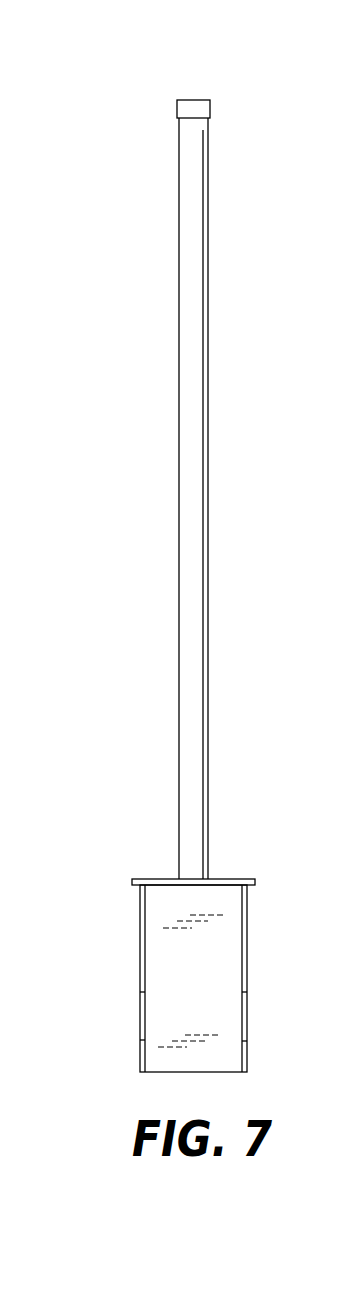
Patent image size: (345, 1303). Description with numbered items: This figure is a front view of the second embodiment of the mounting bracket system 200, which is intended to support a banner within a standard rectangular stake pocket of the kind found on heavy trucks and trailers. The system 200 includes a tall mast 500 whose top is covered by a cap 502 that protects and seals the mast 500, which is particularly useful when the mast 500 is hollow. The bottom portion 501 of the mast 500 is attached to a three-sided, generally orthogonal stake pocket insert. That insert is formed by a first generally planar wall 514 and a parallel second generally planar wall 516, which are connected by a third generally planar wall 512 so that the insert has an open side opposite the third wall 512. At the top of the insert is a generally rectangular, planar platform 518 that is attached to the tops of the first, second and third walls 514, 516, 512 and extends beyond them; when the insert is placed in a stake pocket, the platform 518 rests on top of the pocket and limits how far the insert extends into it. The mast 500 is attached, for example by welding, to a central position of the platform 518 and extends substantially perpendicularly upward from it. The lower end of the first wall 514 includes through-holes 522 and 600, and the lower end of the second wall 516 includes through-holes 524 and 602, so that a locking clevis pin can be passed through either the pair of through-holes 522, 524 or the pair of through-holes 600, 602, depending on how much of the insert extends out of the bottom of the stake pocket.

The system 200 is at (122, 435).
The mast 500 is at (208, 542).
The bottom portion 501 is at (72, 917).
The cap 502 is at (192, 100).
The third generally planar wall 512 is at (218, 982).
The first generally planar wall 514 is at (140, 936).
The second generally planar wall 516 is at (250, 928).
The platform 518 is at (151, 879).
The through-hole 522 is at (108, 1040).
The through-hole 524 is at (253, 1041).
The through-hole 600 is at (108, 992).
The through-hole 602 is at (253, 992).